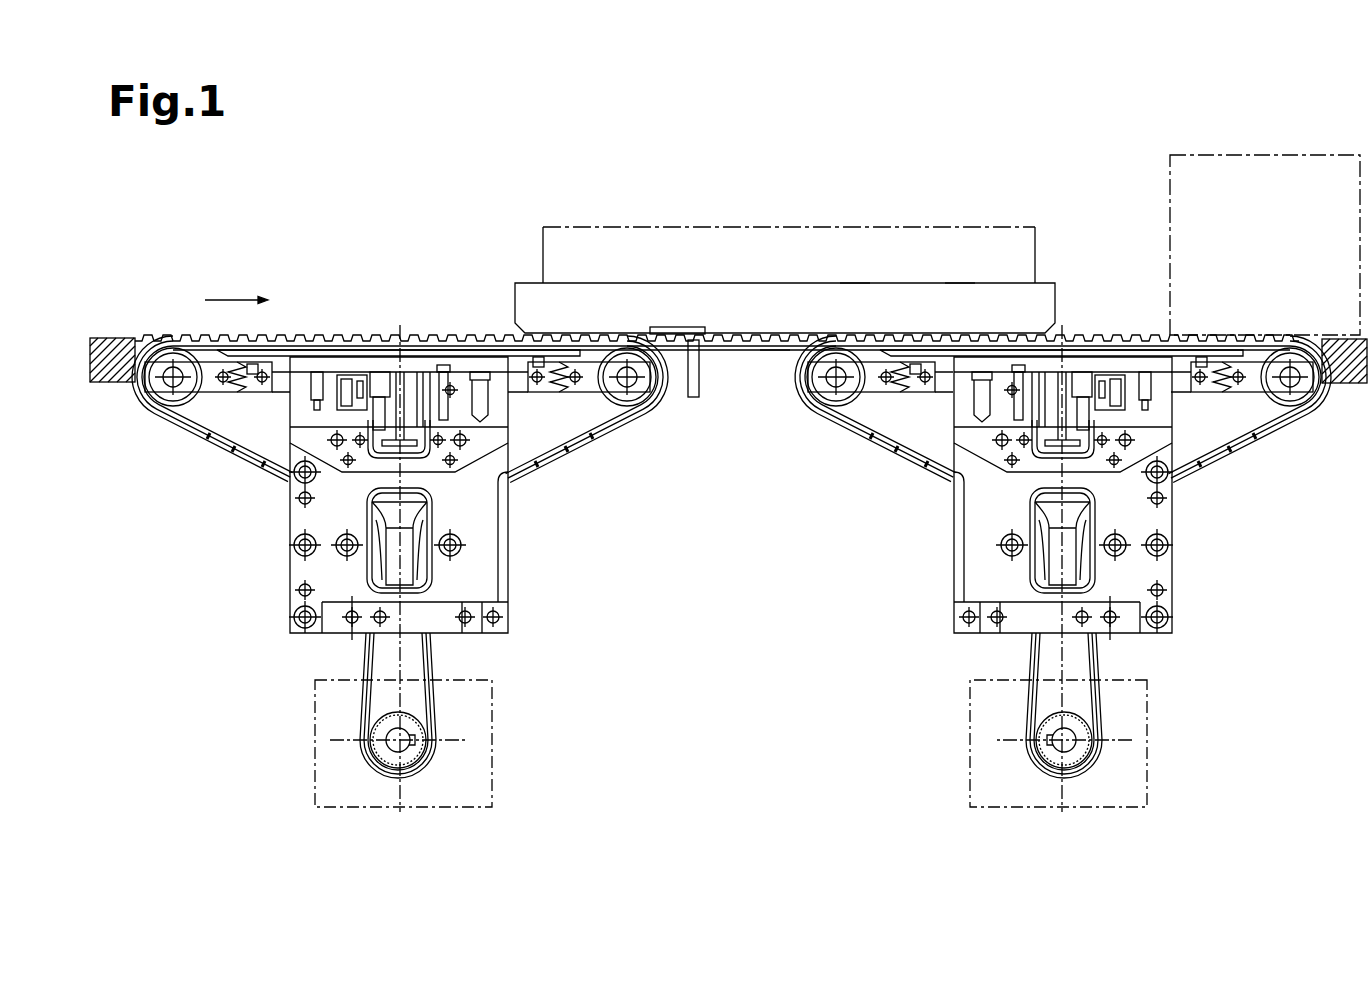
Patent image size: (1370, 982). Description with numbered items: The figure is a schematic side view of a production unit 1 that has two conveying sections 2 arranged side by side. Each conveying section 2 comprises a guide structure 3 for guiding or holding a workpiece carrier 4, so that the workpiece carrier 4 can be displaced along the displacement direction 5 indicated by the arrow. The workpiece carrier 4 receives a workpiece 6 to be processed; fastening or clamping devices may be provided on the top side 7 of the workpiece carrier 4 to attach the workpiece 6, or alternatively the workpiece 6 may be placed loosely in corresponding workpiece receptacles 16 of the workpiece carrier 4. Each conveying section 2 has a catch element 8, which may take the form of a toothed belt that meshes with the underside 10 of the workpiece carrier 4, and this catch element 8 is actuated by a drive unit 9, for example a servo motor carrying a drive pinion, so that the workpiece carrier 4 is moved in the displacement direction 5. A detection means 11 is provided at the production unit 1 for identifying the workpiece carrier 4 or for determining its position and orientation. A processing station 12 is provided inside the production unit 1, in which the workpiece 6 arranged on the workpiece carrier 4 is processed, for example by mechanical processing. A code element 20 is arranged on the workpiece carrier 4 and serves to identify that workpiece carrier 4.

The production unit 1 is at (1082, 136).
The conveying section 2 is at (362, 285).
The guide structure 3 is at (737, 358).
The workpiece carrier 4 is at (750, 298).
The displacement direction 5 is at (229, 298).
The workpiece 6 is at (562, 252).
The top side 7 is at (962, 268).
The catch element 8 is at (573, 440).
The drive unit 9 is at (527, 735).
The underside 10 is at (776, 362).
The detection means 11 is at (696, 405).
The processing station 12 is at (1256, 140).
The workpiece receptacle 16 is at (855, 265).
The code element 20 is at (672, 328).